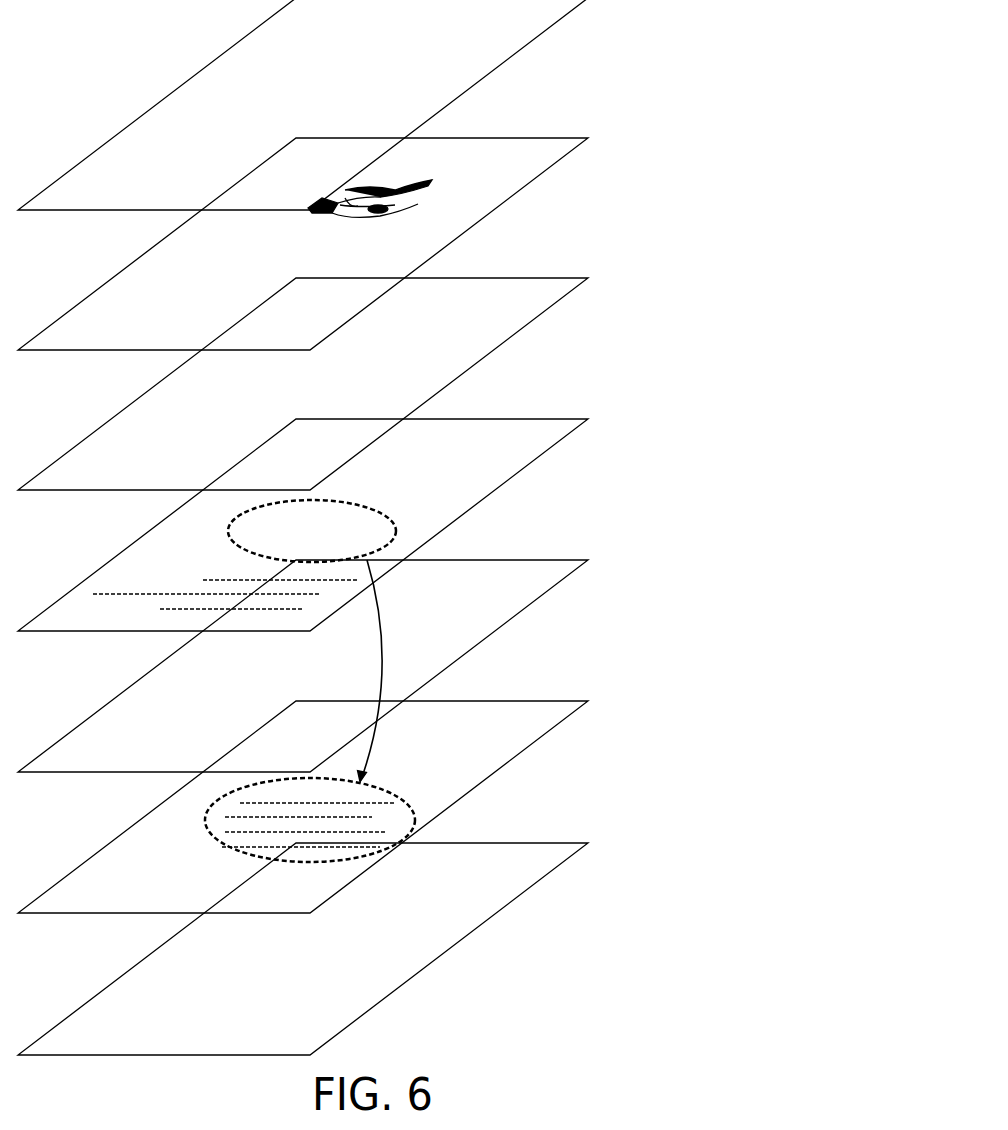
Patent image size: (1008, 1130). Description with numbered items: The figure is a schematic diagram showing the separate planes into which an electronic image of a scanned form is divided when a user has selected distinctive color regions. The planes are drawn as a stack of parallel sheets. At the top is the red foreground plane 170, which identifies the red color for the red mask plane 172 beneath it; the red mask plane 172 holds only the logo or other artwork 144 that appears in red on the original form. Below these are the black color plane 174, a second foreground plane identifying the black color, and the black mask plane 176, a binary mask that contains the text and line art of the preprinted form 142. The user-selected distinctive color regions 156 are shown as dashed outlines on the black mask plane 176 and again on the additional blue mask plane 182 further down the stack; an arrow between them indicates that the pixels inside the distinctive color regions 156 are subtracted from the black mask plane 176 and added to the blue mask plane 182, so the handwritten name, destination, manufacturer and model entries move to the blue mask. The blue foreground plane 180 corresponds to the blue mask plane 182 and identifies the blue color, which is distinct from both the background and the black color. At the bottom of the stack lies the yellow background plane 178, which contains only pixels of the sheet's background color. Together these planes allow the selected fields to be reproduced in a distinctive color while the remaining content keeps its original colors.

The red foreground plane 170 is at (447, 60).
The red mask plane 172 is at (450, 202).
The logo or other artwork 144 is at (442, 176).
The black color plane 174 is at (479, 333).
The black mask plane 176 is at (443, 492).
The preprinted form 142 is at (535, 437).
The distinctive color regions 156 is at (396, 520).
The blue foreground plane 180 is at (436, 645).
The blue mask plane 182 is at (443, 773).
The yellow background plane 178 is at (408, 935).